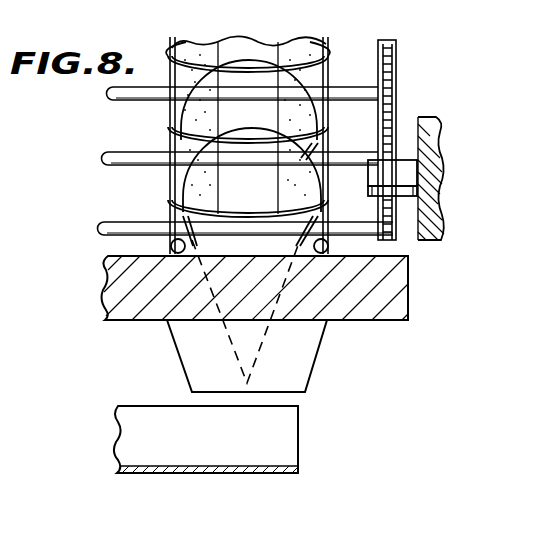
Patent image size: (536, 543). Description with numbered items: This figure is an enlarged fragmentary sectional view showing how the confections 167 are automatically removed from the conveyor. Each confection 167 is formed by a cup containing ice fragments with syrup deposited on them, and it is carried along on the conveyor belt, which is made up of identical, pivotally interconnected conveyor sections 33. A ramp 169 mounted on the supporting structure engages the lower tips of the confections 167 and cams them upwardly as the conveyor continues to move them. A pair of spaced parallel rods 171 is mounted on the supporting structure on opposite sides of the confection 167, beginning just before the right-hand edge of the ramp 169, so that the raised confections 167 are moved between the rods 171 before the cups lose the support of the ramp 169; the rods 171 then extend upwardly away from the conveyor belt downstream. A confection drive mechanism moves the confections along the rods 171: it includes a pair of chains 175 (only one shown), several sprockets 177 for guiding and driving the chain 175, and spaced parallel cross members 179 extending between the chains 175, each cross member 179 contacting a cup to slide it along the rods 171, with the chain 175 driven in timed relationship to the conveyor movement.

The confection 167 is at (180, 116).
The cross members 179 is at (343, 86).
The rods 171 is at (175, 243).
The conveyor sections 33 is at (373, 297).
The ramp 169 is at (268, 436).
The chains 175 is at (398, 66).
The sprockets 177 is at (395, 130).